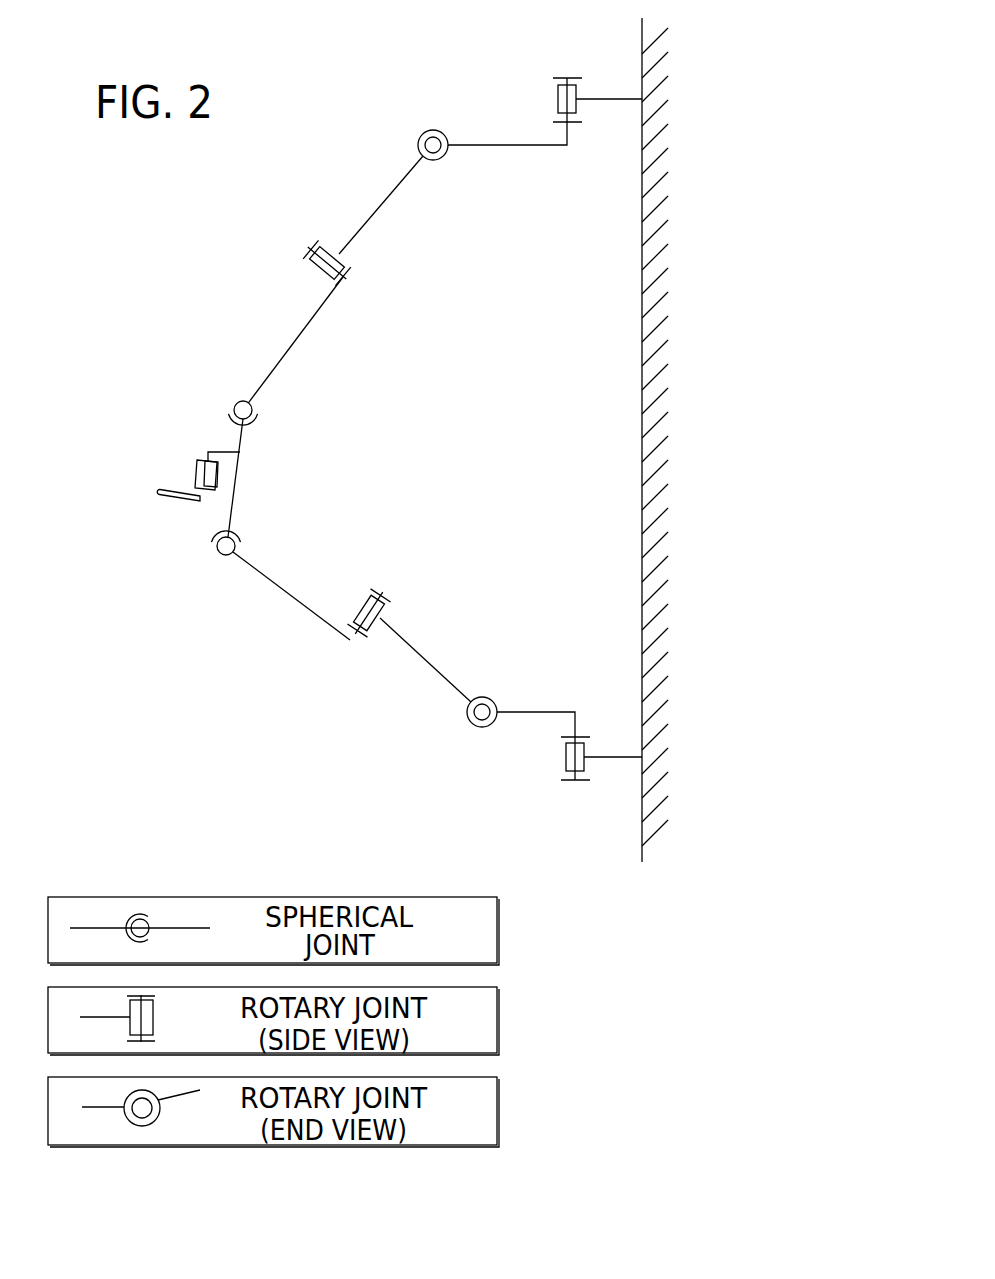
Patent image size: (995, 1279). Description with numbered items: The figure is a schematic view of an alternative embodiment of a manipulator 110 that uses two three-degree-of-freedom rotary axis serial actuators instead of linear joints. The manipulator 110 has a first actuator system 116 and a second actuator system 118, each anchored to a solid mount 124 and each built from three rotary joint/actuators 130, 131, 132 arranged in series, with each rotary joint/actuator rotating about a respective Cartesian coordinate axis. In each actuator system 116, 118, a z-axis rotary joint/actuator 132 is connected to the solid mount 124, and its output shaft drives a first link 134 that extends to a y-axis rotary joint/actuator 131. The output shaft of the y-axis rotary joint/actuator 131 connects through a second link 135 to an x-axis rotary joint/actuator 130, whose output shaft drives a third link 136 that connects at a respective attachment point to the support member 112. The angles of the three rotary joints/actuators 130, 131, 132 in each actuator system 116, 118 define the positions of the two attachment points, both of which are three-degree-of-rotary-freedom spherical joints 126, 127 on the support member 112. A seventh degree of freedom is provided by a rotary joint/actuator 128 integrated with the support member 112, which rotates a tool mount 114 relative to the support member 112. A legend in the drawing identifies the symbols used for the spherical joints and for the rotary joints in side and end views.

The manipulator 110 is at (146, 391).
The support member 112 is at (239, 478).
The tool mount 114 is at (176, 500).
The first actuator system 116 is at (466, 78).
The second actuator system 118 is at (369, 672).
The solid mount 124 is at (647, 458).
The spherical joint 126 is at (231, 402).
The spherical joint 127 is at (220, 556).
The rotary joint/actuator 128 is at (182, 468).
The x-axis rotary joint/actuator 130 is at (367, 273).
The y-axis rotary joint/actuator 131 is at (417, 139).
The z-axis rotary joint/actuator 132 is at (545, 84).
The first link 134 is at (506, 147).
The second link 135 is at (385, 202).
The third link 136 is at (323, 320).